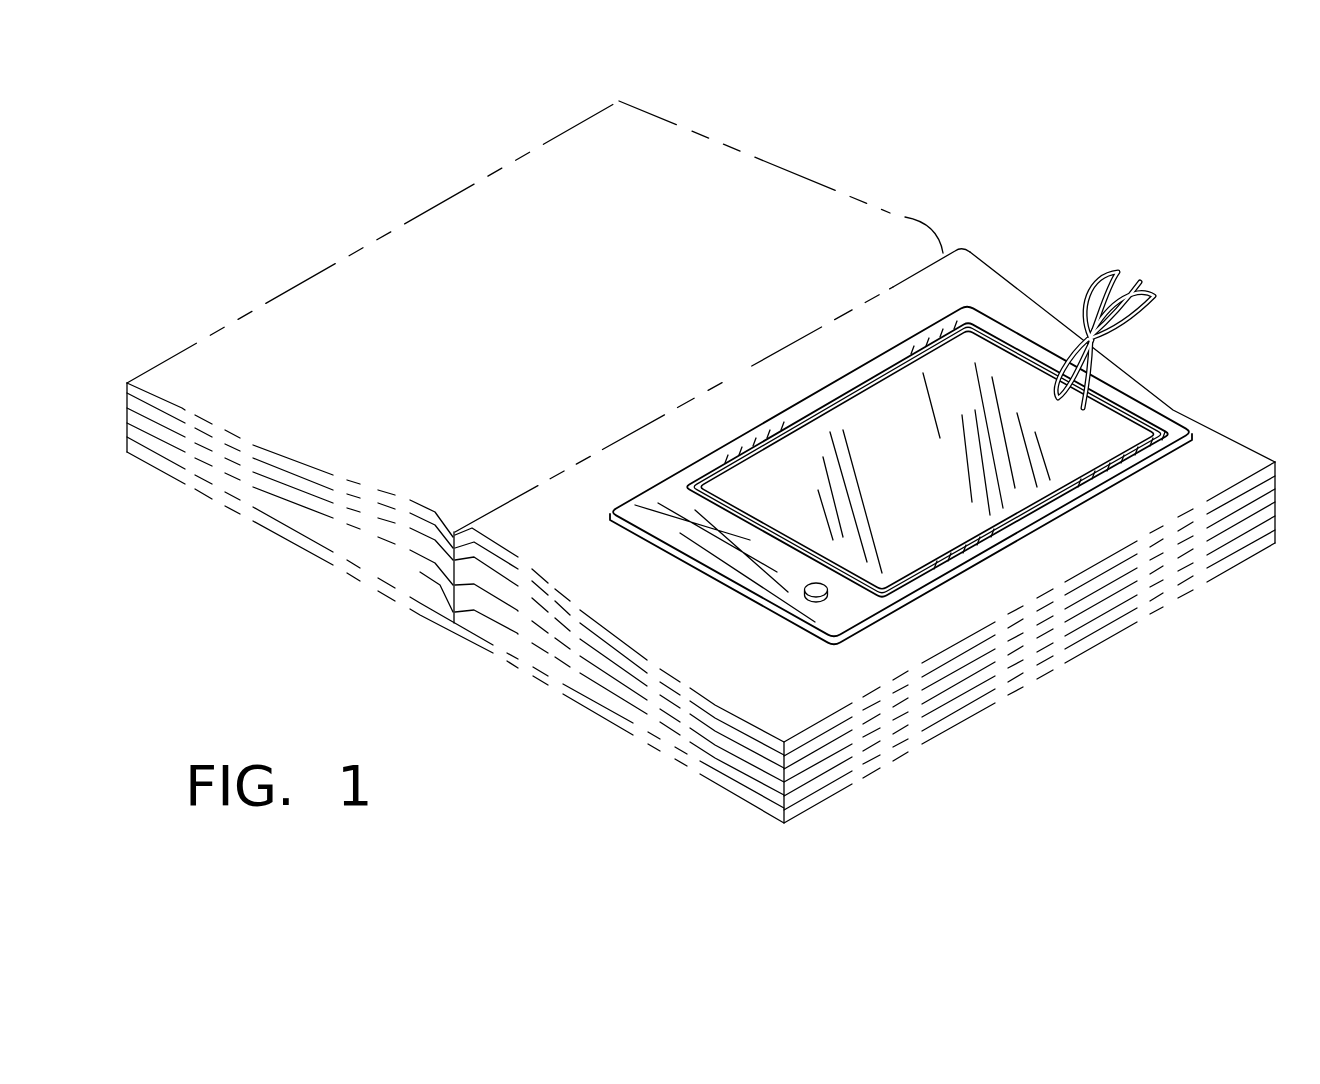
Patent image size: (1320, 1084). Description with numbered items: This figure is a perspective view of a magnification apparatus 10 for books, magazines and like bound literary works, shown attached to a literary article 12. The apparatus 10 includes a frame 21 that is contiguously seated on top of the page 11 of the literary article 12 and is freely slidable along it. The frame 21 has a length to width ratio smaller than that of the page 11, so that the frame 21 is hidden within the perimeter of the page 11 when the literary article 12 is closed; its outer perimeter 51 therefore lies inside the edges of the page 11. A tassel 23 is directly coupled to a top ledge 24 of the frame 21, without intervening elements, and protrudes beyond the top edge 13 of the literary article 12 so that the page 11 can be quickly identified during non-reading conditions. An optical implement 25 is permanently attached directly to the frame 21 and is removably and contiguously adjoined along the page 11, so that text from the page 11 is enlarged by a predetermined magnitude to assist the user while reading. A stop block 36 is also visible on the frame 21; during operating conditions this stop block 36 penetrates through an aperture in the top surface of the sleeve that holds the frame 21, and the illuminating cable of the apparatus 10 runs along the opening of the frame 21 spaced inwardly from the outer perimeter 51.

The apparatus 10 is at (917, 188).
The page 11 is at (1233, 460).
The literary article 12 is at (1157, 588).
The top edge 13 is at (1173, 410).
The frame 21 is at (1195, 433).
The tassel 23 is at (1140, 281).
The top ledge 24 is at (1143, 390).
The optical implement 25 is at (972, 343).
The stop block 36 is at (828, 592).
The outer perimeter 51 is at (1015, 547).